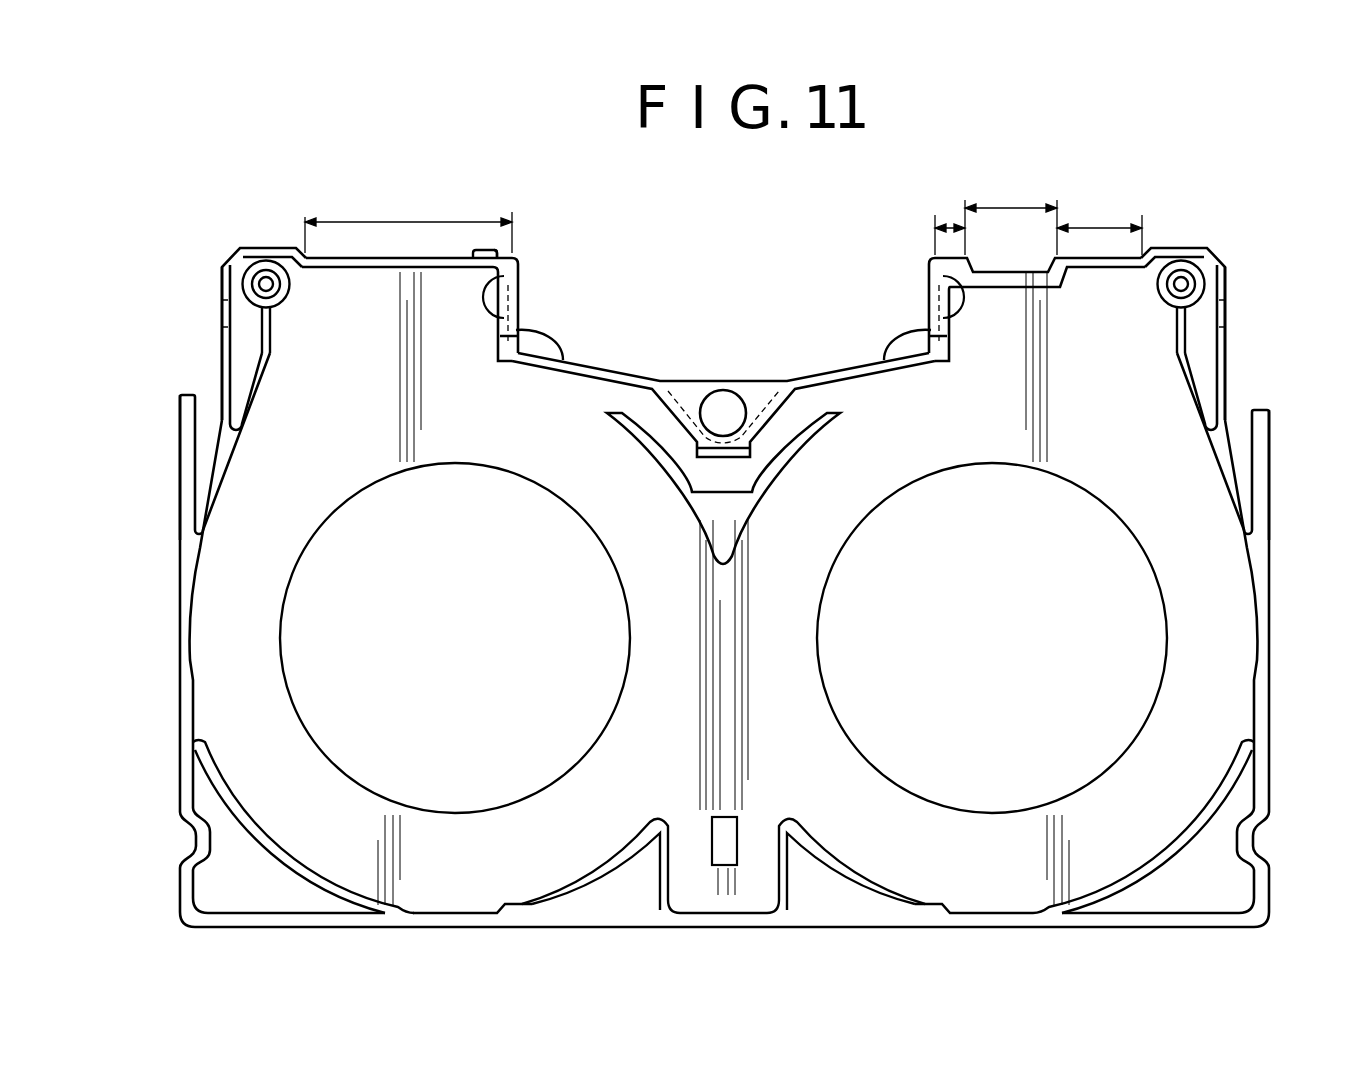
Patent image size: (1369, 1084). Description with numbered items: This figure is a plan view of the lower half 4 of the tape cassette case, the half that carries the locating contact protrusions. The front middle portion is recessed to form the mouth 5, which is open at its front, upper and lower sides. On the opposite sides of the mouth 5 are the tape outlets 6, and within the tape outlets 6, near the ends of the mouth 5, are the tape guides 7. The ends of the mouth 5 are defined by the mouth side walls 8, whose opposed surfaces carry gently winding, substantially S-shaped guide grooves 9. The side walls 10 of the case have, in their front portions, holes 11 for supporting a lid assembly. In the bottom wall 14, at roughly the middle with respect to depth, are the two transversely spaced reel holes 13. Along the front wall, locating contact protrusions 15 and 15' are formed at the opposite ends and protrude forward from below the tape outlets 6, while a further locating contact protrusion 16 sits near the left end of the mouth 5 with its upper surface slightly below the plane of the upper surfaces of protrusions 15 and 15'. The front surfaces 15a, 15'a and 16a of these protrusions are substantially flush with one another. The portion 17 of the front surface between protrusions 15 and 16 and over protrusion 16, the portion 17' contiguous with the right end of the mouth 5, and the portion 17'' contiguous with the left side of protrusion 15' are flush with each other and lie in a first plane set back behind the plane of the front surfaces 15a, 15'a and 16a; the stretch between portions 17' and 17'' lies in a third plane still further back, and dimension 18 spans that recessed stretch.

The lower half 4 is at (1270, 703).
The mouth 5 is at (655, 380).
The tape outlets 6 is at (467, 280).
The tape guides 7 is at (490, 298).
The mouth side walls 8 is at (518, 297).
The guide grooves 9 is at (522, 336).
The side walls 10 is at (182, 568).
The holes 11 is at (222, 312).
The reel holes 13 is at (482, 462).
The bottom wall 14 is at (893, 870).
The locating contact protrusion 15 is at (252, 266).
The locating contact protrusion 15' is at (1208, 269).
The front surface 15a is at (273, 247).
The front surface 15'a is at (1183, 299).
The locating contact protrusion 16 is at (476, 250).
The front surface 16a is at (487, 250).
The portion of the front surface 17 is at (408, 224).
The portion of the front surface 17' is at (951, 226).
The portion of the front surface 17'' is at (1099, 226).
The recess width 18 is at (1011, 216).